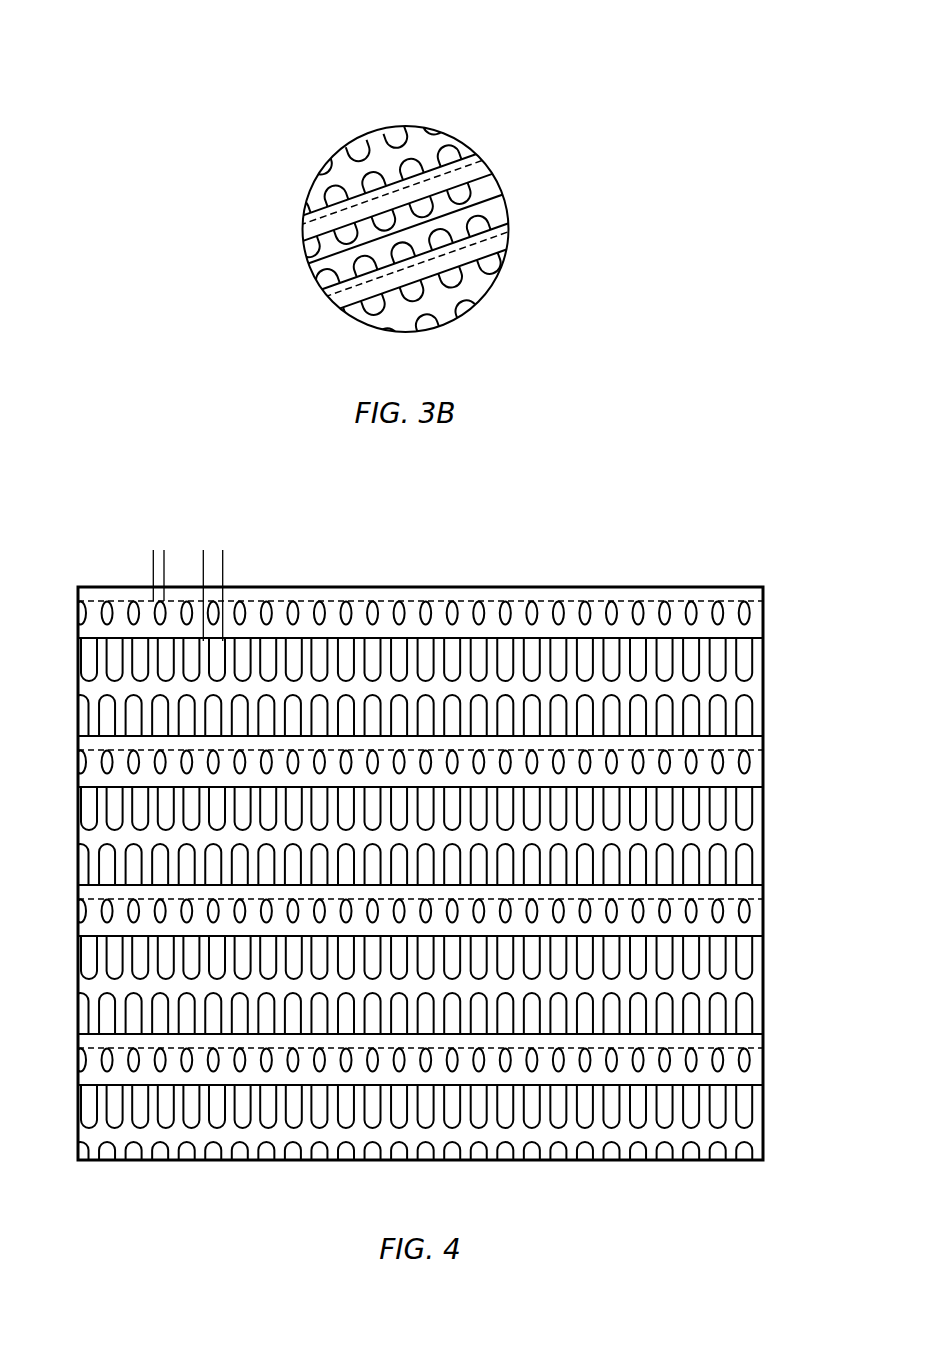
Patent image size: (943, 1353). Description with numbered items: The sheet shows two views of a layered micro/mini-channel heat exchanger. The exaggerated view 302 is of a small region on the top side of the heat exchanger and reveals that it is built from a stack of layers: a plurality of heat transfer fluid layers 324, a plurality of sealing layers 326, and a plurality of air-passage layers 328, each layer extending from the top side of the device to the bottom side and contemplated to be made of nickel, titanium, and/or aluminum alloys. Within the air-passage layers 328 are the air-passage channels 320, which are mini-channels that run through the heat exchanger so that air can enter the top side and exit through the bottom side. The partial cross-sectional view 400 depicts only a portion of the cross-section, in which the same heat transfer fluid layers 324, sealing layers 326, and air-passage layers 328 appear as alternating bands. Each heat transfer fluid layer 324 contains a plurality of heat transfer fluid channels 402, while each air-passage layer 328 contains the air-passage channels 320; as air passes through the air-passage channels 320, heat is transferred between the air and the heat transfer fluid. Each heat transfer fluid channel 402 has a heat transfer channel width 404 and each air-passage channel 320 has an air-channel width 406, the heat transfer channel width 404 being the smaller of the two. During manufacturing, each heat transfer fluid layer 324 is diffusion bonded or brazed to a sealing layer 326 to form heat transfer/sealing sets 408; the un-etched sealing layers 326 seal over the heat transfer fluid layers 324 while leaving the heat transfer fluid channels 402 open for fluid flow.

In FIG. 3B, the exaggerated view 302 is at (441, 101).
In FIG. 3B, the air-passage channels 320 is at (331, 189).
In FIG. 4, the air-passage channels 320 is at (565, 695).
In FIG. 3B, the heat transfer fluid layers 324 is at (487, 168).
In FIG. 4, the heat transfer fluid layers 324 is at (765, 617).
In FIG. 3B, the sealing layers 326 is at (467, 162).
In FIG. 4, the sealing layers 326 is at (752, 586).
In FIG. 3B, the air-passage layers 328 is at (404, 238).
In FIG. 4, the air-passage layers 328 is at (427, 882).
In FIG. 4, the partial cross-sectional view 400 is at (177, 513).
In FIG. 4, the heat transfer fluid channels 402 is at (345, 750).
In FIG. 4, the heat transfer channel width 404 is at (176, 558).
In FIG. 4, the air-channel width 406 is at (190, 558).
In FIG. 4, the heat transfer/sealing sets 408 is at (430, 861).